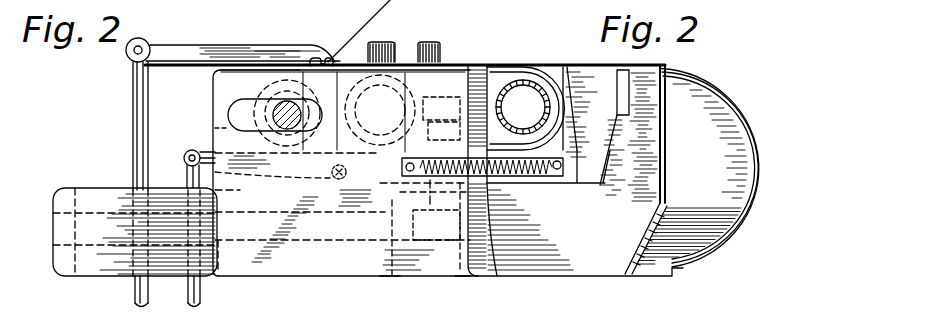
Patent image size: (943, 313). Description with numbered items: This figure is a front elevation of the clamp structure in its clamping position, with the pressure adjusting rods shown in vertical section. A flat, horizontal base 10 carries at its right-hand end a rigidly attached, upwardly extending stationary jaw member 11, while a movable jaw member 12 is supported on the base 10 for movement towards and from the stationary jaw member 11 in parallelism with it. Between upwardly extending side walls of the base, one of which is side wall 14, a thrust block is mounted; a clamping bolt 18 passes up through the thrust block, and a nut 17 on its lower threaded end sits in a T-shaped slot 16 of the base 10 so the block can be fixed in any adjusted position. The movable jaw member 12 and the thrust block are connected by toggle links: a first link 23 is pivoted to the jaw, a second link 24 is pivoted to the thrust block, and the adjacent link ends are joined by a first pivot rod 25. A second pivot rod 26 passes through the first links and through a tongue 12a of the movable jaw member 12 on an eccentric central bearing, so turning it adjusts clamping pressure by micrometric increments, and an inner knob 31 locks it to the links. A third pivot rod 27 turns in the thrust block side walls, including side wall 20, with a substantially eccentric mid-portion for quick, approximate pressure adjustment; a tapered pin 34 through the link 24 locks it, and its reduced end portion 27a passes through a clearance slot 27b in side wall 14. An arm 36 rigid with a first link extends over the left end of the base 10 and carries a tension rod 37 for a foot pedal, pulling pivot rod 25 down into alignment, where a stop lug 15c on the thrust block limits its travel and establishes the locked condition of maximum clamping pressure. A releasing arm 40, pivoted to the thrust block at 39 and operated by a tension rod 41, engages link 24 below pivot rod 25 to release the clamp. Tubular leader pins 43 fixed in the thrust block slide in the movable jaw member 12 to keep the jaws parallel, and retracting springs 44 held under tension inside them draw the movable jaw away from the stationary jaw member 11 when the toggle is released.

The base 10 is at (578, 274).
The stationary jaw member 11 is at (666, 62).
The movable jaw member 12 is at (587, 70).
The tongue 12a is at (586, 70).
The side wall 14 is at (218, 74).
The stop lug 15c is at (378, 184).
The T-shaped slot 16 is at (390, 276).
The nut 17 is at (460, 274).
The clamping bolt 18 is at (472, 80).
The side wall 20 is at (228, 128).
The first link 23 is at (515, 72).
The second link 24 is at (365, 50).
The first pivot rod 25 is at (402, 62).
The second pivot rod 26 is at (540, 92).
The third pivot rod 27 is at (281, 67).
The reduced-diameter end portion 27a is at (286, 102).
The clearance slot 27b is at (228, 107).
The inner knob 31 is at (533, 86).
The tapered pin 34 is at (320, 62).
The arm 36 is at (195, 30).
The tension rod 37 is at (135, 98).
The pivotal connection 39 is at (333, 180).
The releasing arm 40 is at (192, 150).
The tension rod 41 is at (200, 294).
The tubular leader pin 43 is at (502, 244).
The retracting spring 44 is at (550, 182).